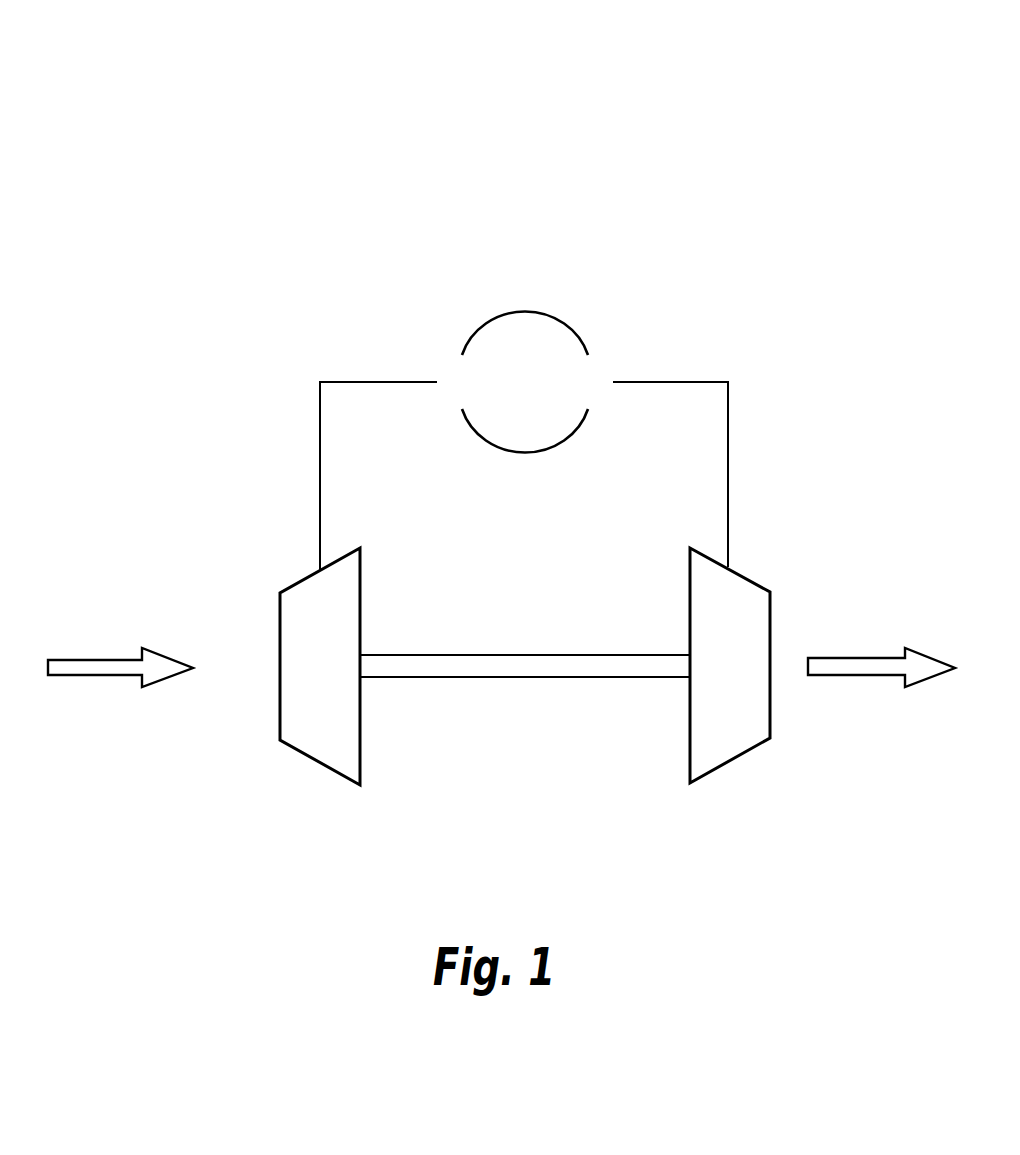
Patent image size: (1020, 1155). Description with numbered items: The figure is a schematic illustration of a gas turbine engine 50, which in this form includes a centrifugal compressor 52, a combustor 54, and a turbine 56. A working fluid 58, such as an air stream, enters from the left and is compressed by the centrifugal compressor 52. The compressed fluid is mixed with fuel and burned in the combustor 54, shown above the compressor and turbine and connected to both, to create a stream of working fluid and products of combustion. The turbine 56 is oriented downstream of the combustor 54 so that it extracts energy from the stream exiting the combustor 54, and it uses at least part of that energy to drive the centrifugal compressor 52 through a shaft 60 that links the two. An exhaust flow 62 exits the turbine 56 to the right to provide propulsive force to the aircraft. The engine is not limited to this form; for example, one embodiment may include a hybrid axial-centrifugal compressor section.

The gas turbine engine 50 is at (780, 155).
The centrifugal compressor 52 is at (312, 792).
The combustor 54 is at (527, 320).
The turbine 56 is at (742, 757).
The working fluid 58 is at (90, 676).
The shaft 60 is at (502, 679).
The exhaust flow 62 is at (847, 658).